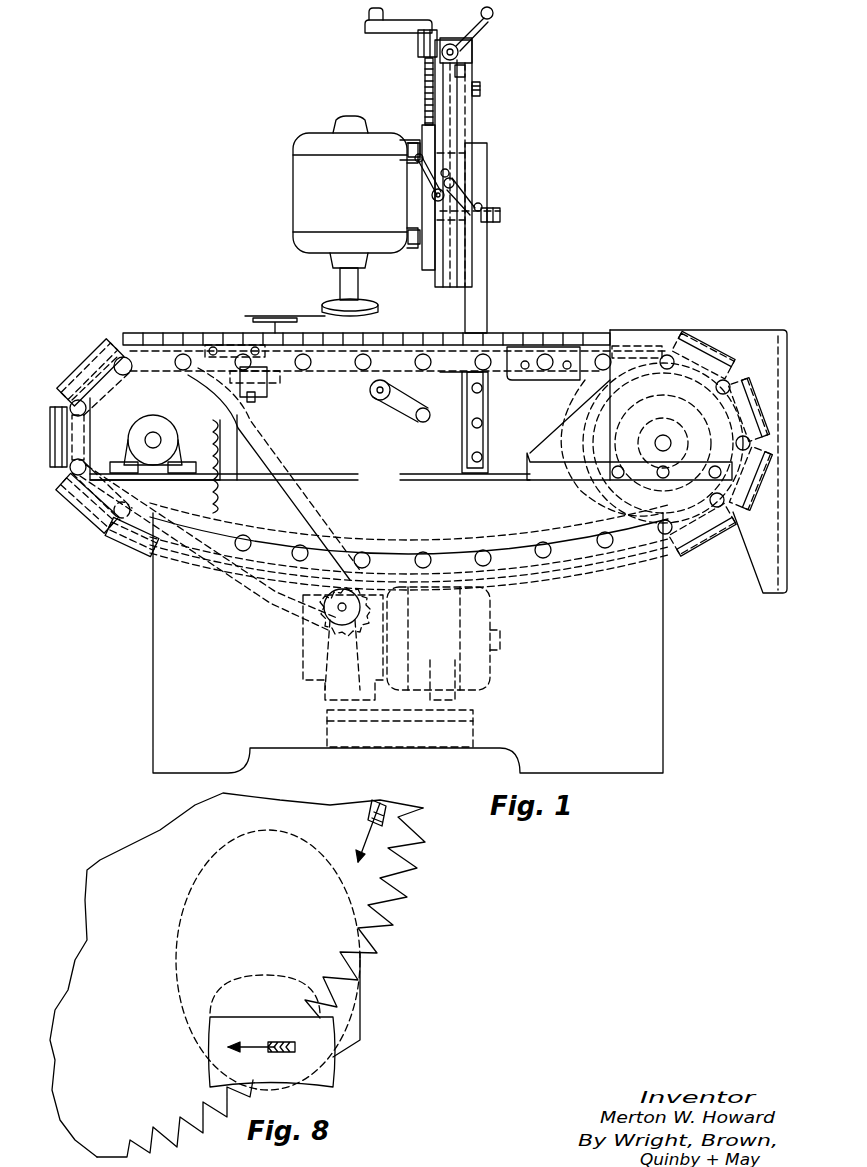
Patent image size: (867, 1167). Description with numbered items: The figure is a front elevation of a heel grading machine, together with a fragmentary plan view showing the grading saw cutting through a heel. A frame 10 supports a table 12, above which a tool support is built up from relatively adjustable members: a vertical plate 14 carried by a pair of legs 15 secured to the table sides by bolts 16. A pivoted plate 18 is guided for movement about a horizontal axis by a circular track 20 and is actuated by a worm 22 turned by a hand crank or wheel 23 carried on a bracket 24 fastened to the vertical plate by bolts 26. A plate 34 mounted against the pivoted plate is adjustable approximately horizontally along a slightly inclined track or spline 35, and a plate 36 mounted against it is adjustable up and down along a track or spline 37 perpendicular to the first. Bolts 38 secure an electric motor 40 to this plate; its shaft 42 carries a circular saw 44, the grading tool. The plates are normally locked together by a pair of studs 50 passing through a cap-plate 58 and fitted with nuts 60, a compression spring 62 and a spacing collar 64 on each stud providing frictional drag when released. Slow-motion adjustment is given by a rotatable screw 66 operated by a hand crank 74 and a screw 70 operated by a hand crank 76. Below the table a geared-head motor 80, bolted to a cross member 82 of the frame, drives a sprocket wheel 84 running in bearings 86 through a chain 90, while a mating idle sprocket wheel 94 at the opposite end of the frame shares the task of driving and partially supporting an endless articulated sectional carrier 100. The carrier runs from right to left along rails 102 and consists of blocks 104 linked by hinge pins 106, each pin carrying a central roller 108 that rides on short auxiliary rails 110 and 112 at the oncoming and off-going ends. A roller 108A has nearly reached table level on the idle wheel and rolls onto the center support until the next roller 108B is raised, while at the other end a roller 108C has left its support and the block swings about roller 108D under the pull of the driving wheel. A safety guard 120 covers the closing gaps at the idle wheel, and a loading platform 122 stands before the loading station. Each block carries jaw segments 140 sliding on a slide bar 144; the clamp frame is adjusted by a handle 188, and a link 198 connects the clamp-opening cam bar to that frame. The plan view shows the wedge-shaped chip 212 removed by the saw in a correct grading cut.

In FIG. 1, the frame 10 is at (176, 631).
In FIG. 1, the table 12 is at (383, 463).
In FIG. 1, the vertical plate 14 is at (462, 128).
In FIG. 1, the legs 15 is at (488, 300).
In FIG. 1, the bolts 16 is at (462, 440).
In FIG. 1, the pivoted plate 18 is at (457, 120).
In FIG. 1, the circular track 20 is at (466, 72).
In FIG. 1, the worm 22 is at (451, 42).
In FIG. 1, the hand crank or wheel 23 is at (478, 38).
In FIG. 1, the bracket 24 is at (473, 56).
In FIG. 1, the bolts 26 is at (481, 88).
In FIG. 1, the plate 34 is at (440, 112).
In FIG. 1, the track or spline 35 is at (449, 173).
In FIG. 1, the plate 36 is at (436, 141).
In FIG. 1, the track or spline 37 is at (470, 153).
In FIG. 1, the bolts 38 is at (409, 146).
In FIG. 1, the electric motor 40 is at (305, 200).
In FIG. 1, the shaft 42 is at (345, 285).
In FIG. 1, the circular saw 44 is at (320, 306).
In FIG. 1, the studs 50 is at (470, 218).
In FIG. 1, the cap-plate 58 is at (467, 173).
In FIG. 1, the nuts 60 is at (500, 215).
In FIG. 1, the compression spring 62 is at (481, 206).
In FIG. 1, the spacing collar 64 is at (490, 222).
In FIG. 1, the rotatable screw 66 is at (430, 199).
In FIG. 1, the screw 70 is at (427, 68).
In FIG. 1, the hand crank 74 is at (425, 176).
In FIG. 1, the hand crank 76 is at (406, 30).
In FIG. 1, the geared-head motor 80 is at (490, 655).
In FIG. 1, the cross member 82 is at (473, 729).
In FIG. 1, the sprocket wheel 84 is at (100, 436).
In FIG. 1, the bearings 86 is at (140, 425).
In FIG. 1, the chain 90 is at (282, 597).
In FIG. 1, the idle sprocket wheel 94 is at (718, 412).
In FIG. 1, the endless articulated sectional carrier 100 is at (572, 572).
In FIG. 1, the rails 102 is at (453, 373).
In FIG. 1, the blocks 104 is at (533, 573).
In FIG. 1, the hinge pins 106 is at (570, 568).
In FIG. 1, the roller 108 is at (600, 570).
In FIG. 1, the roller 108A is at (683, 345).
In FIG. 1, the roller 108B is at (740, 345).
In FIG. 1, the roller 108C is at (183, 340).
In FIG. 1, the roller 108D is at (243, 345).
In FIG. 1, the auxiliary rail or center support 110 is at (562, 388).
In FIG. 1, the auxiliary rail or center support 112 is at (247, 398).
In FIG. 1, the safety guard 120 is at (700, 330).
In FIG. 1, the loading platform 122 is at (522, 376).
In FIG. 1, the jaw segments 140 is at (745, 385).
In FIG. 1, the slide bar 144 is at (655, 343).
In FIG. 1, the handle 188 is at (386, 401).
In FIG. 1, the link 198 is at (265, 393).
In FIG. 8, the chip 212 is at (322, 1070).